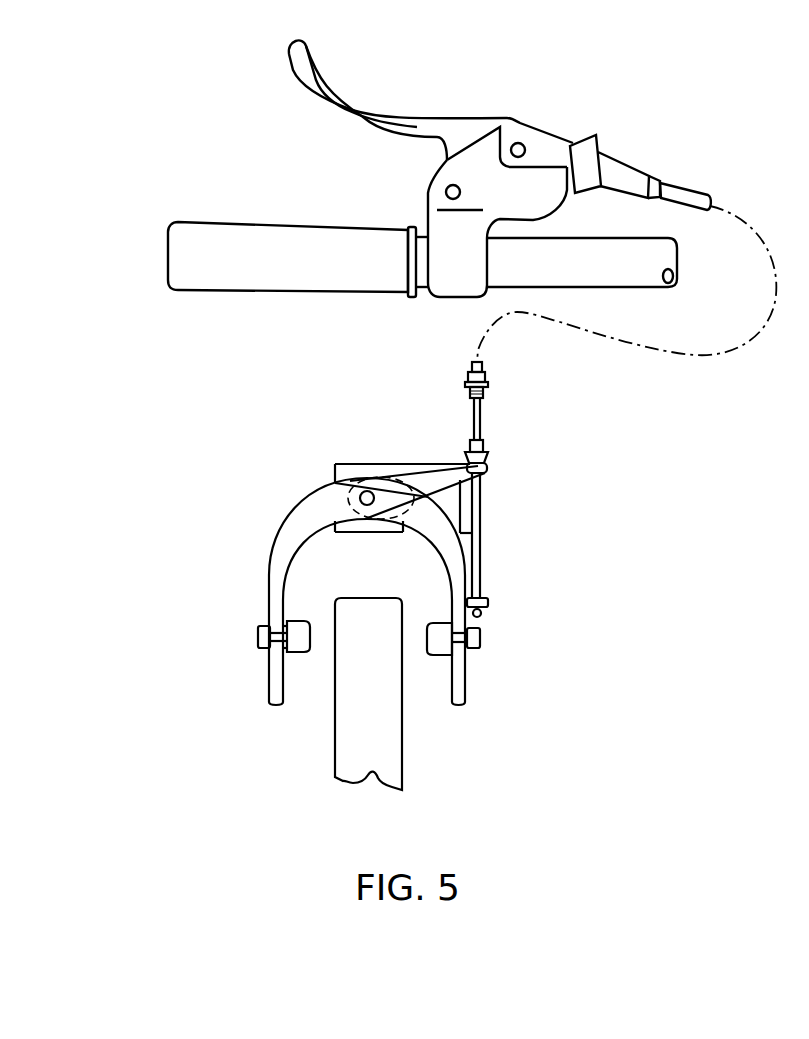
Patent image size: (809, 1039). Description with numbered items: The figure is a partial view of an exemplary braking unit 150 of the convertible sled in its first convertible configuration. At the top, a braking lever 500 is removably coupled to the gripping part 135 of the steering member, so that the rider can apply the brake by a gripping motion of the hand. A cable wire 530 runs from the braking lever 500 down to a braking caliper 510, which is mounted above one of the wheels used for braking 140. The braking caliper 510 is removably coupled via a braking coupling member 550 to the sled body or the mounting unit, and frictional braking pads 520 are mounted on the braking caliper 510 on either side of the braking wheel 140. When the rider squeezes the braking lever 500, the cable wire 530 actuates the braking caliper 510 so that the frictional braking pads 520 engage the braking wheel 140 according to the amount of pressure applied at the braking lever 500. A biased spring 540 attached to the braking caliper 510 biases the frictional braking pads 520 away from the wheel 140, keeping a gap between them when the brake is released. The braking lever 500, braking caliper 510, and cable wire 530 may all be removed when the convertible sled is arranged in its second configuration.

The braking lever 500 is at (363, 106).
The gripping part 135 is at (213, 220).
The braking unit 150 is at (548, 550).
The braking caliper 510 is at (305, 505).
The frictional braking pads 520 is at (300, 653).
The cable wire 530 is at (485, 417).
The biased spring 540 is at (361, 494).
The braking coupling member 550 is at (373, 463).
The wheel used for braking 140 is at (405, 735).